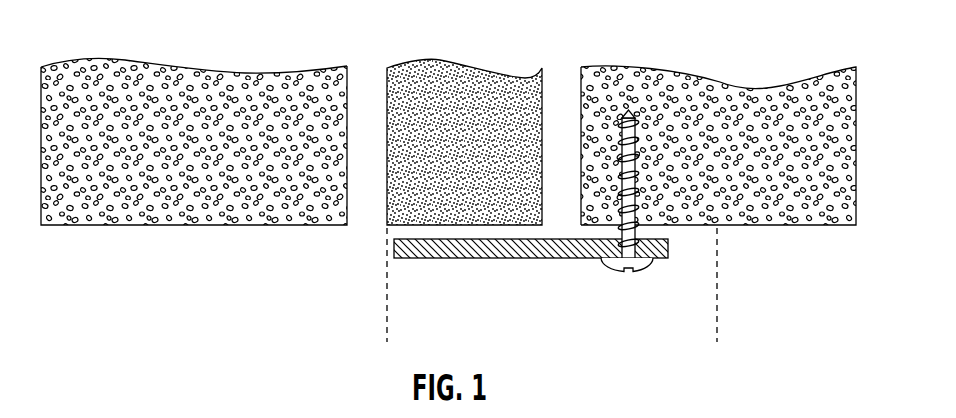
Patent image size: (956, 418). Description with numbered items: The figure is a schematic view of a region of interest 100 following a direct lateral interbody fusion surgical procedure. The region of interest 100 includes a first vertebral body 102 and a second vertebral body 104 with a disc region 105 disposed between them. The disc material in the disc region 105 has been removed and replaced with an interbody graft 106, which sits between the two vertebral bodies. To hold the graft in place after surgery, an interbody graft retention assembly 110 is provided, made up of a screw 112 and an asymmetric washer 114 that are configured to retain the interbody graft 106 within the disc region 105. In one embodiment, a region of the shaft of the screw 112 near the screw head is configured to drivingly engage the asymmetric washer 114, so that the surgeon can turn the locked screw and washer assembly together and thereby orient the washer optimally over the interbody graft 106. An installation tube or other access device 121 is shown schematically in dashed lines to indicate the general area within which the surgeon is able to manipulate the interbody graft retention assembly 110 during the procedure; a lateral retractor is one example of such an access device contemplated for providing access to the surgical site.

The region of interest 100 is at (108, 40).
The first vertebral body 102 is at (246, 72).
The second vertebral body 104 is at (757, 90).
The disc region 105 is at (558, 87).
The interbody graft 106 is at (436, 60).
The interbody graft retention assembly 110 is at (550, 303).
The screw 112 is at (638, 167).
The asymmetric washer 114 is at (453, 258).
The installation tube or other access device 121 is at (387, 278).